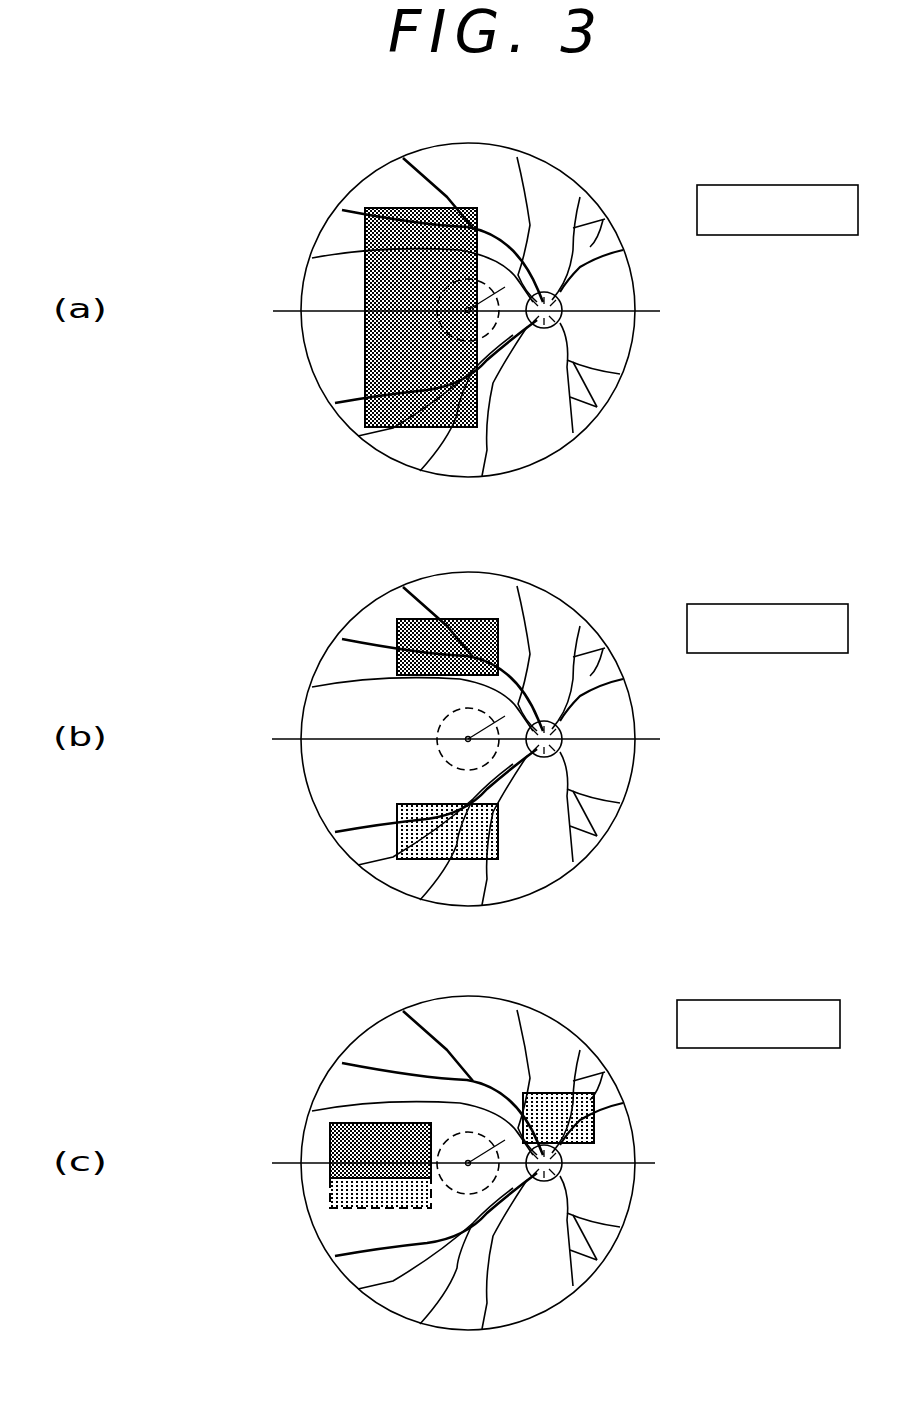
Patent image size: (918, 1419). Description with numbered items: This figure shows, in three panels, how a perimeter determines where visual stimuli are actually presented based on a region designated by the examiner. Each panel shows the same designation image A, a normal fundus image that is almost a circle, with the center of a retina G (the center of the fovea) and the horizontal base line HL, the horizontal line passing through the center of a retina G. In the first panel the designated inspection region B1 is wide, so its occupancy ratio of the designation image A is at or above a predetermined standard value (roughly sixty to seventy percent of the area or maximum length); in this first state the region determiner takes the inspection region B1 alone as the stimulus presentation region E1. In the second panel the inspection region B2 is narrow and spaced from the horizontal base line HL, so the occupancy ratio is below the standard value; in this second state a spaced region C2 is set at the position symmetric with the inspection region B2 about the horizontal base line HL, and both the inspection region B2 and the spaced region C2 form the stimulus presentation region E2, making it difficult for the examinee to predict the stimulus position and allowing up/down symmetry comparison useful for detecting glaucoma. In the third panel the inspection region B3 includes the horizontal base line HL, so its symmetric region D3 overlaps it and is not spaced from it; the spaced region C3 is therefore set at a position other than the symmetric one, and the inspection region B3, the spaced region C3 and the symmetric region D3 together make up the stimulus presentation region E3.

The designation image A is at (320, 237).
The horizontal base line HL is at (280, 311).
The center of a retina G is at (540, 299).
The inspection region B1 is at (392, 207).
The stimulus presentation region E1 is at (777, 210).
The inspection region B2 is at (402, 619).
The spaced region C2 is at (397, 807).
The stimulus presentation region E2 is at (767, 628).
The inspection region B3 is at (350, 1123).
The spaced region C3 is at (596, 1129).
The symmetric region D3 is at (330, 1198).
The stimulus presentation region E3 is at (758, 1024).